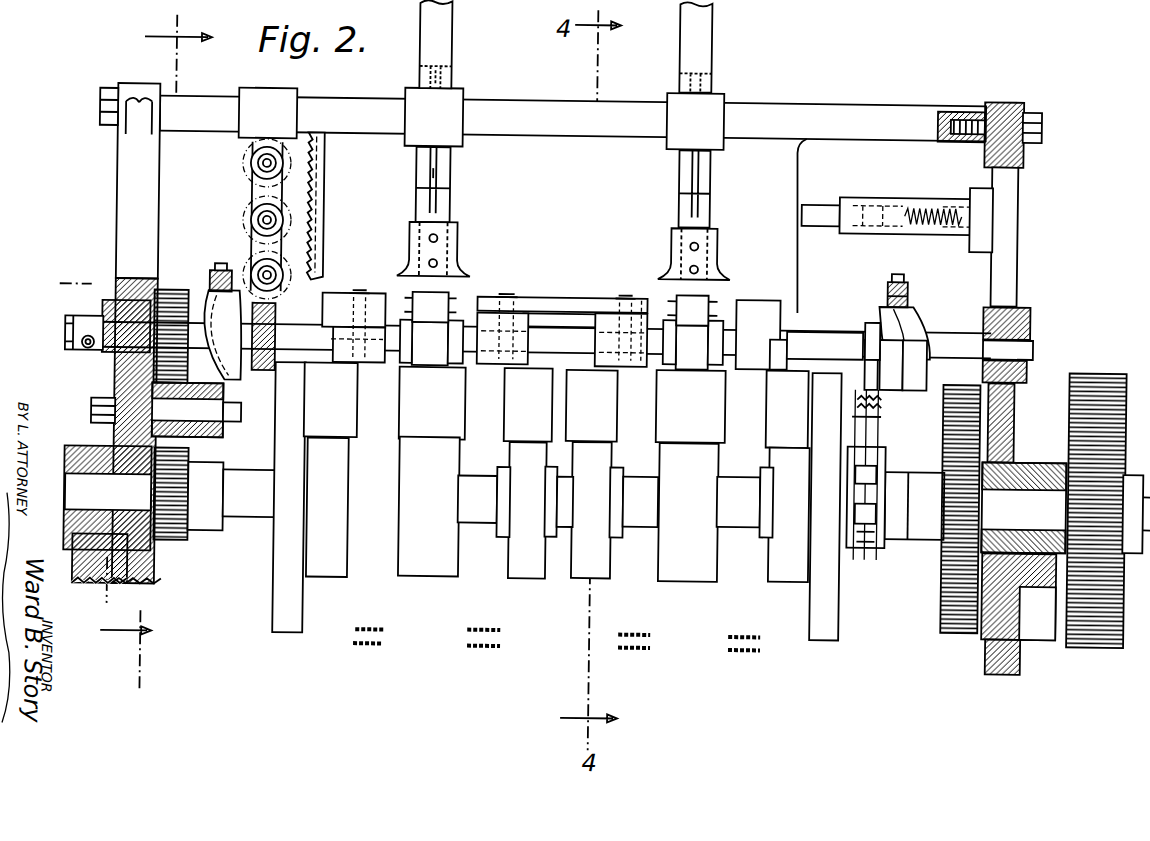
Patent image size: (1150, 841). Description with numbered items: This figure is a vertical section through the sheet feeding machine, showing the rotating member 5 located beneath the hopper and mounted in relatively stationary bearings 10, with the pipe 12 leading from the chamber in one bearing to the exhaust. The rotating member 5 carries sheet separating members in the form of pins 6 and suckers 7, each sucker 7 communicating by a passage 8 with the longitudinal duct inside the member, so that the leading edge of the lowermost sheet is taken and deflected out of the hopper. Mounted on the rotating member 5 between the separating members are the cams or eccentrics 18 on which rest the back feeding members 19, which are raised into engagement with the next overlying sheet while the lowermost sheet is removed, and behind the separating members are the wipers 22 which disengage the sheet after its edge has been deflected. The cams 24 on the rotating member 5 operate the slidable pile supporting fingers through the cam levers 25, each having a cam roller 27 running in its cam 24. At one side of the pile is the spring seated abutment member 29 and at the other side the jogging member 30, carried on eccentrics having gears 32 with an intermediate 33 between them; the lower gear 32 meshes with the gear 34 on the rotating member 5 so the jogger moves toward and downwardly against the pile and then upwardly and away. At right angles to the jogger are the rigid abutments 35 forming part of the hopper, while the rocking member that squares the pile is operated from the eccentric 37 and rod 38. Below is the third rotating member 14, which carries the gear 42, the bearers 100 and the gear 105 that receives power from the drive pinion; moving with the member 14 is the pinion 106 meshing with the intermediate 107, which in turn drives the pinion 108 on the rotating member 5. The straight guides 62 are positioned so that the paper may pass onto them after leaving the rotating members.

The rotating member 5 is at (550, 355).
The pins 6 is at (372, 296).
The suckers 7 is at (356, 296).
The passage 8 is at (640, 298).
The bearings 10 is at (116, 300).
The pipe 12 is at (87, 355).
The third rotating member 14 is at (626, 475).
The cams or eccentrics 18 is at (694, 390).
The back feeding members 19 is at (560, 309).
The wipers 22 is at (368, 375).
The cams 24 is at (232, 380).
The cam levers 25 is at (888, 288).
The cam roller 27 is at (906, 300).
The spring seated abutment member 29 is at (798, 272).
The jogging member 30 is at (322, 165).
The gears 32 is at (238, 172).
The intermediate 33 is at (282, 217).
The gear 34 is at (276, 320).
The rigid abutments 35 is at (447, 78).
The eccentric 37 is at (878, 548).
The rod 38 is at (862, 380).
The gear 42 is at (1090, 367).
The straight guides 62 is at (470, 648).
The bearers 100 is at (292, 638).
The gear 105 is at (943, 400).
The pinion 106 is at (190, 500).
The intermediate 107 is at (190, 445).
The pinion 108 is at (192, 290).